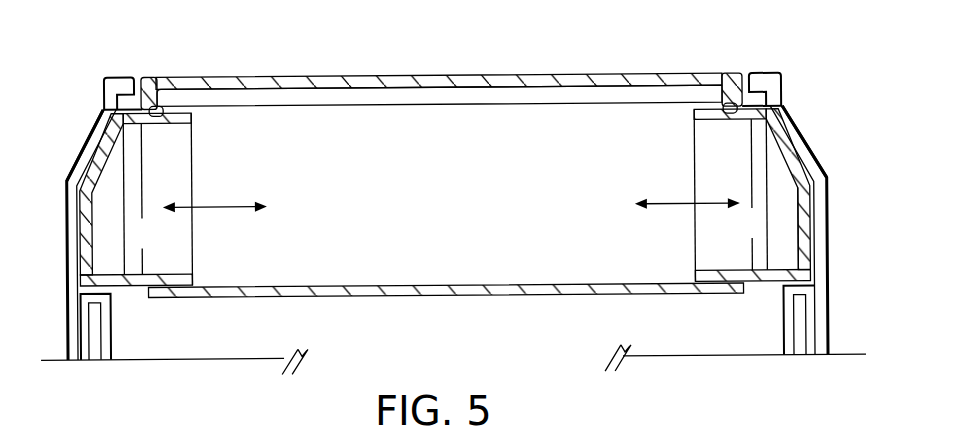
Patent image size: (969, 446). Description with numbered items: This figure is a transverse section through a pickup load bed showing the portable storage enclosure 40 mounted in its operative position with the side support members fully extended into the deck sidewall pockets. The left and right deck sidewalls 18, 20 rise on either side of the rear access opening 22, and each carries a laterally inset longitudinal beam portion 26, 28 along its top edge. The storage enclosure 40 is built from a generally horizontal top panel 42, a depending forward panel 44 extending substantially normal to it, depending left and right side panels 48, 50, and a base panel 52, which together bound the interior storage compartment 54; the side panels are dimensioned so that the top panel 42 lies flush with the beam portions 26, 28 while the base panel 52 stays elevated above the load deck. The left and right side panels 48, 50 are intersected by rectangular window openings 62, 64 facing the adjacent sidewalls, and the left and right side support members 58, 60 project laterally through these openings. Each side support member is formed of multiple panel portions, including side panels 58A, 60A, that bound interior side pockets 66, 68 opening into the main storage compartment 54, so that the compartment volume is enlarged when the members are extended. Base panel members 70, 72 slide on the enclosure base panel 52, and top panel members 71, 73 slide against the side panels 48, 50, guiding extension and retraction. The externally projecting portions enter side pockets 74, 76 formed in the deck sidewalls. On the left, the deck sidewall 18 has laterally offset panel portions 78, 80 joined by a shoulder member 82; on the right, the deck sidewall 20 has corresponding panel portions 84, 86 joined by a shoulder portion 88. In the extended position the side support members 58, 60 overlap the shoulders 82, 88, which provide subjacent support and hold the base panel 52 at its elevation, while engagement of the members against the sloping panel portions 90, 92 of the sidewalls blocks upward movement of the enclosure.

The left deck sidewall 18 is at (82, 225).
The right deck sidewall 20 is at (822, 222).
The rear access opening 22 is at (708, 337).
The longitudinal beam portion 26 is at (137, 50).
The longitudinal beam portion 28 is at (768, 75).
The storage enclosure 40 is at (441, 77).
The top panel 42 is at (410, 75).
The depending forward panel 44 is at (268, 122).
The left side panel 48 is at (108, 110).
The right side panel 50 is at (753, 110).
The base panel 52 is at (389, 285).
The interior storage compartment 54 is at (470, 193).
The left side support member 58 is at (161, 199).
The side panel 58A is at (95, 193).
The right side support member 60 is at (736, 195).
The side panel 60A is at (795, 204).
The window opening 62 is at (160, 104).
The window opening 64 is at (723, 86).
The interior side pocket 66 is at (156, 241).
The interior side pocket 68 is at (765, 237).
The base panel member 70 is at (182, 276).
The top panel member 71 is at (165, 118).
The base panel member 72 is at (708, 272).
The top panel member 73 is at (708, 119).
The side pocket 74 is at (88, 211).
The side pocket 76 is at (802, 190).
The panel portion 78 is at (75, 266).
The panel portion 80 is at (104, 326).
The shoulder member 82 is at (96, 296).
The deck sidewall panel portion 84 is at (820, 254).
The deck sidewall panel portion 86 is at (810, 319).
The shoulder portion 88 is at (805, 294).
The sloping panel portion 90 is at (88, 151).
The sloping panel portion 92 is at (795, 135).